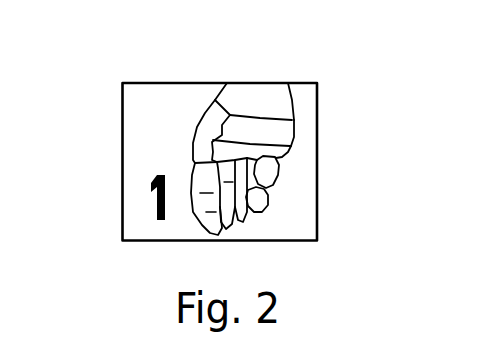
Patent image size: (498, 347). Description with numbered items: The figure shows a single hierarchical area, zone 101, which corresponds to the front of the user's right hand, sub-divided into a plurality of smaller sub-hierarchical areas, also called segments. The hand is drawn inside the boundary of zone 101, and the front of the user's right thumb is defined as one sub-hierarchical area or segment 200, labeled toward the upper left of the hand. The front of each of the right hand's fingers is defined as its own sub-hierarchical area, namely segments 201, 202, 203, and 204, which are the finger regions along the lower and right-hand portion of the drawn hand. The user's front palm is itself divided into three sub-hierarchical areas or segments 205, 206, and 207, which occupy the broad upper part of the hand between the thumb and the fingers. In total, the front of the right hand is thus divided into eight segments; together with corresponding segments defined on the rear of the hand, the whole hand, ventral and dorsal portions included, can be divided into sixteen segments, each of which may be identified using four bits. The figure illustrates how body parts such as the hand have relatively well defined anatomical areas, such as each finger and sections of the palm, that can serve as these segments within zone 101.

The zone 101 is at (143, 90).
The segment 200 is at (205, 128).
The sub-hierarchical area 201 is at (205, 177).
The sub-hierarchical area 202 is at (226, 197).
The sub-hierarchical area 203 is at (238, 186).
The sub-hierarchical area 204 is at (278, 170).
The segment 205 is at (258, 149).
The segment 206 is at (267, 132).
The segment 207 is at (268, 103).